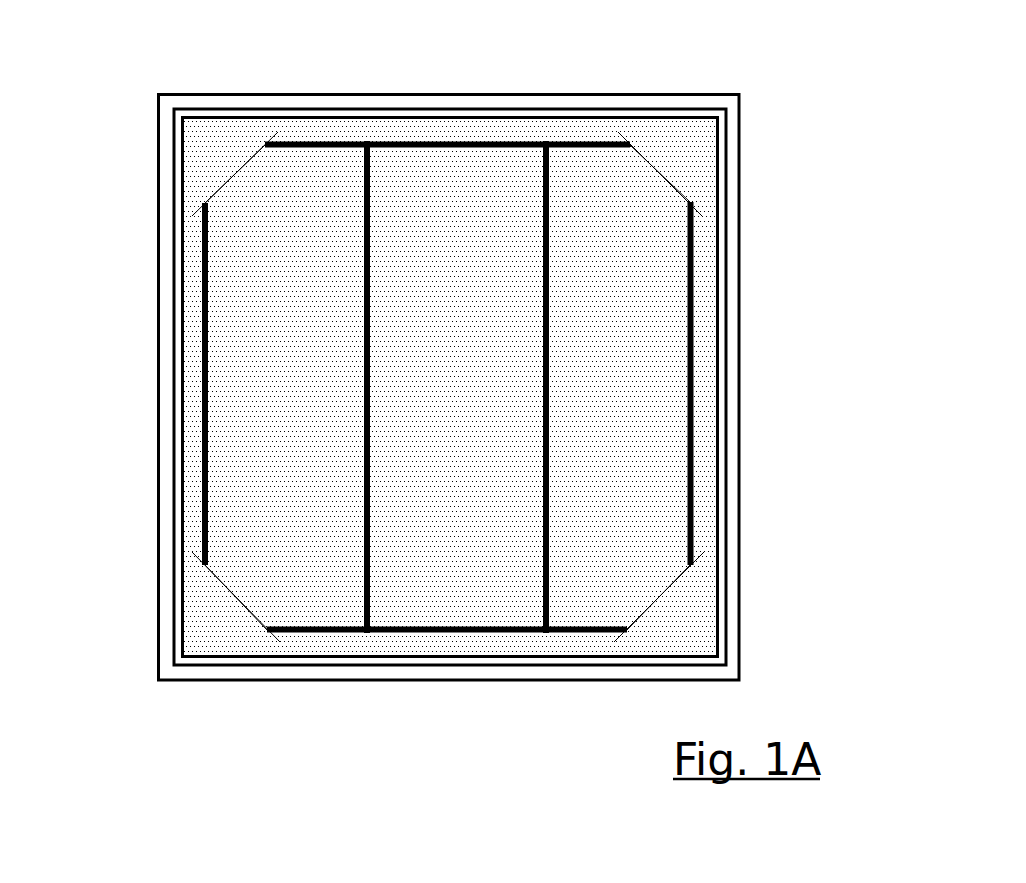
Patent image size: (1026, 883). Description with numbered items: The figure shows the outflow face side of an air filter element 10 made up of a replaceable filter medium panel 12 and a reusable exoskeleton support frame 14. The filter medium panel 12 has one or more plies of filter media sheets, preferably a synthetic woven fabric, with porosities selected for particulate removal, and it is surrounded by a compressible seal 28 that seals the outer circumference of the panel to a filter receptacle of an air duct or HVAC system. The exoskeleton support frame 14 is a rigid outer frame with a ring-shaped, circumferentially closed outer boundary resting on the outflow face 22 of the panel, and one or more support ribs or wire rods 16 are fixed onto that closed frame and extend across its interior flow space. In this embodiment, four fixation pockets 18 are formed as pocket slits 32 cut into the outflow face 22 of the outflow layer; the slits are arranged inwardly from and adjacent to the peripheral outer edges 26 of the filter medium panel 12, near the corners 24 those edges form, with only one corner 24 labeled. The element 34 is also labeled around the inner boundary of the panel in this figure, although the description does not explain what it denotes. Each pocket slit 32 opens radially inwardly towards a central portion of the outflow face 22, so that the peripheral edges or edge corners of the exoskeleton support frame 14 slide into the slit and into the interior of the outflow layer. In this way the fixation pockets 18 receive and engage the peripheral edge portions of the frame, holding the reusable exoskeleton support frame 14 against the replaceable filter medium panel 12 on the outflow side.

The air filter element 10 is at (470, 398).
The filter medium panel 12 is at (643, 328).
The exoskeleton support frame 14 is at (475, 148).
The support ribs or wire rods 16 is at (545, 397).
The fixation pockets 18 is at (210, 153).
The outflow face 22 is at (491, 348).
The corner 24 is at (737, 99).
The peripheral outer edges 26 is at (222, 95).
The compressible seal 28 is at (167, 328).
The pocket slits 32 is at (240, 165).
The inner edge 34 is at (640, 118).